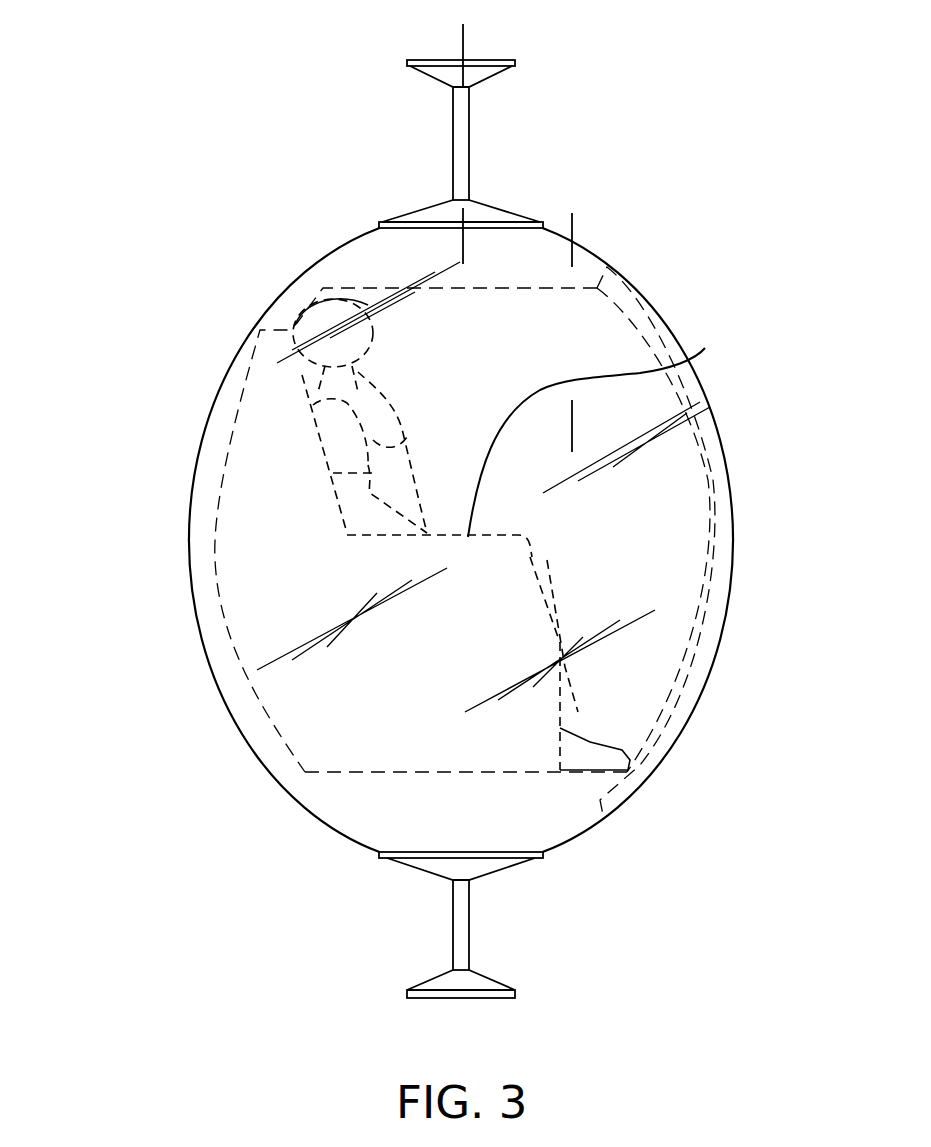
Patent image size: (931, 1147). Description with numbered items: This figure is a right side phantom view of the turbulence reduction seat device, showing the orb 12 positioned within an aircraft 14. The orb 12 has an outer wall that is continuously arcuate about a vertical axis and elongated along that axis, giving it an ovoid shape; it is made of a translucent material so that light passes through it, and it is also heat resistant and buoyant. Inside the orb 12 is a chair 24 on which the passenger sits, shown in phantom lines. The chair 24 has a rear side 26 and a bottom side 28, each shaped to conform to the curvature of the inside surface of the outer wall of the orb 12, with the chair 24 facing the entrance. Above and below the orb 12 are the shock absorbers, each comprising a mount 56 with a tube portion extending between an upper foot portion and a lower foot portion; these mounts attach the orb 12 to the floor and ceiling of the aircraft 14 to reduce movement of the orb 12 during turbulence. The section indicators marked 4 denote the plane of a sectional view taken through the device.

The orb 12 is at (190, 407).
The aircraft 14 is at (380, 300).
The chair 24 is at (705, 348).
The rear side 26 is at (215, 558).
The bottom side 28 is at (350, 772).
The mount 56 is at (453, 148).
The section line of FIG. 4 is at (463, 24).